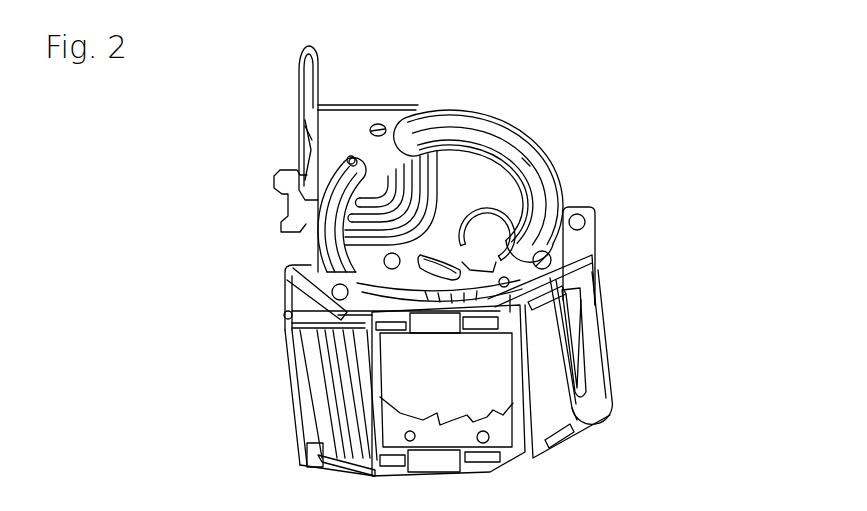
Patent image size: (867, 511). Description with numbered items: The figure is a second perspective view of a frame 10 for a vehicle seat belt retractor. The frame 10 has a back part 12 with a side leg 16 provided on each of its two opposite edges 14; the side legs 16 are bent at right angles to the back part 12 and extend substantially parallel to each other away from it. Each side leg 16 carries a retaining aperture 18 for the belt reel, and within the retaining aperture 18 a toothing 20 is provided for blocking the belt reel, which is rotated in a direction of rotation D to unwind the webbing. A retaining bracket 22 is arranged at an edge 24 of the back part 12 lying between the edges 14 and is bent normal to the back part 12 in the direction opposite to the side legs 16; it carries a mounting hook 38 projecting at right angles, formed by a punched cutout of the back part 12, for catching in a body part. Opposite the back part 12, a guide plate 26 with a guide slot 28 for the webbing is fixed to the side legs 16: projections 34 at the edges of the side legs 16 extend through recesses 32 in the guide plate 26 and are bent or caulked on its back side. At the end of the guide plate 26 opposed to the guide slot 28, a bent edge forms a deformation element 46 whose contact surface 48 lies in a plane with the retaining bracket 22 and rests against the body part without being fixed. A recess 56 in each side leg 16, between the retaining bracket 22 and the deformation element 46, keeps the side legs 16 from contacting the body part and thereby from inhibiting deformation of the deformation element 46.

The frame 10 is at (586, 102).
The back part 12 is at (421, 185).
The edges 14 is at (353, 106).
The side leg 16 is at (507, 150).
The retaining aperture 18 is at (470, 165).
The toothing 20 is at (283, 272).
The retaining bracket 22 is at (298, 84).
The edge 24 is at (305, 126).
The guide plate 26 is at (543, 343).
The guide slot 28 is at (583, 363).
The recesses 32 is at (588, 265).
The projections 34 is at (566, 294).
The mounting hook 38 is at (272, 184).
The deformation element 46 is at (290, 320).
The contact surface 48 is at (292, 381).
The recess 56 is at (308, 244).
The direction of rotation D is at (526, 162).